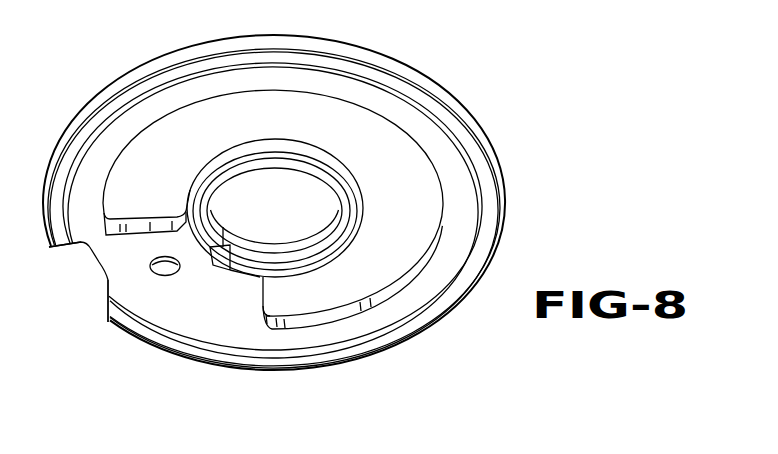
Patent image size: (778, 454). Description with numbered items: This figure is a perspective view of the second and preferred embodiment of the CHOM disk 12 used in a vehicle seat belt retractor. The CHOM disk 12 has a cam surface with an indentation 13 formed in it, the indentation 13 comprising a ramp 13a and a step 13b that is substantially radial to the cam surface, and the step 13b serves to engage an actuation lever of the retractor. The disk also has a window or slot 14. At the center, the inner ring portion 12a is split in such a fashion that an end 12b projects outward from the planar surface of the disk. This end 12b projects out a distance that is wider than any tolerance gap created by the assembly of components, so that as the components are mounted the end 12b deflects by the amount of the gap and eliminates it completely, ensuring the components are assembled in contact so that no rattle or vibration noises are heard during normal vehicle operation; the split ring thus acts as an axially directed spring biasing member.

The CHOM disk 12 is at (432, 63).
The inner ring portion 12a is at (220, 167).
The end 12b is at (222, 270).
The indentation 13 is at (148, 343).
The ramp 13a is at (109, 324).
The step 13b is at (49, 248).
The window or slot 14 is at (397, 157).